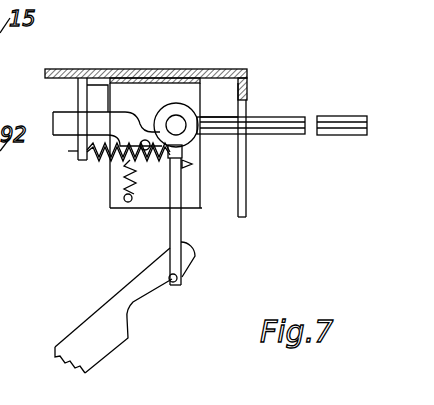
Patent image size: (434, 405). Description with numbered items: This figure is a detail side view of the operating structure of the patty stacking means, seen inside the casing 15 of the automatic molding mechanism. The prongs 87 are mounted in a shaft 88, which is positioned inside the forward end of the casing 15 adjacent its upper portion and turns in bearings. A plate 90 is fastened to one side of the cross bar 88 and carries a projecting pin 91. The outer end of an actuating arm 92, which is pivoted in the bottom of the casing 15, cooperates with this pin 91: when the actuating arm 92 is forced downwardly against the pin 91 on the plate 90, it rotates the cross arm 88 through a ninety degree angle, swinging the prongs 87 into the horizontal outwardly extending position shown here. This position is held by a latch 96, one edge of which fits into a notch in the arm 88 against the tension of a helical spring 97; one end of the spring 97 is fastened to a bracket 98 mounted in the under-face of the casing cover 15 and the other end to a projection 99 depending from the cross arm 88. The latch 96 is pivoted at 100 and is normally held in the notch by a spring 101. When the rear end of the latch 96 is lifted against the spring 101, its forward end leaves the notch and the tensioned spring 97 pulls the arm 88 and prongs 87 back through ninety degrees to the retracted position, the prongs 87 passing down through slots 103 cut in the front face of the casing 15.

The casing 15 is at (67, 70).
The prongs 87 is at (267, 121).
The shaft 88 is at (182, 108).
The plate 90 is at (172, 215).
The projecting pin 91 is at (183, 277).
The actuating arm 92 is at (117, 305).
The latch 96 is at (113, 122).
The helical spring 97 is at (100, 155).
The bracket 98 is at (77, 89).
The projection 99 is at (183, 170).
The pivot 100 is at (145, 151).
The spring 101 is at (123, 192).
The slots 103 is at (243, 191).